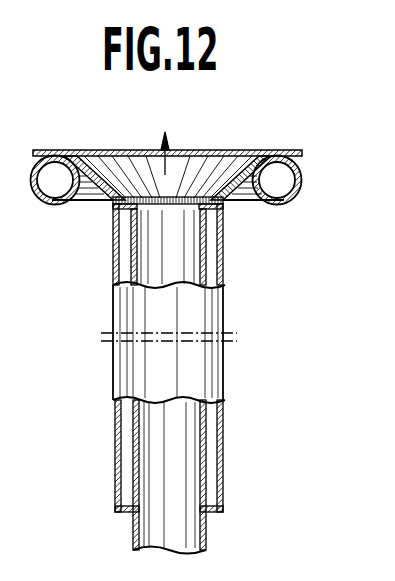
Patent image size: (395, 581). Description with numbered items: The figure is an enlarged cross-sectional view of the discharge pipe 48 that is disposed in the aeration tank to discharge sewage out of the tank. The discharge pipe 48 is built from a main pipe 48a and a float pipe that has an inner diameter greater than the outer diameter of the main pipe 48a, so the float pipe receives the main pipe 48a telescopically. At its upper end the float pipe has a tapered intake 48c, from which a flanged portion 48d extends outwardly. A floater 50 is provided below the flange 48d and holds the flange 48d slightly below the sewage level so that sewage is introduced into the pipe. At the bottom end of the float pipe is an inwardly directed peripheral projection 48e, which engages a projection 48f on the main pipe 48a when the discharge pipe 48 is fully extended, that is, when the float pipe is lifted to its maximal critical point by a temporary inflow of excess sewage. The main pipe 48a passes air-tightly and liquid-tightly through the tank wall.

The discharge pipe 48 is at (226, 381).
The main pipe 48a is at (133, 532).
The tapered intake 48c is at (238, 156).
The flanged portion 48d is at (280, 150).
The inwardly directed peripheral projection 48e is at (222, 494).
The projection of the main pipe 48f is at (223, 237).
The floater 50 is at (57, 204).